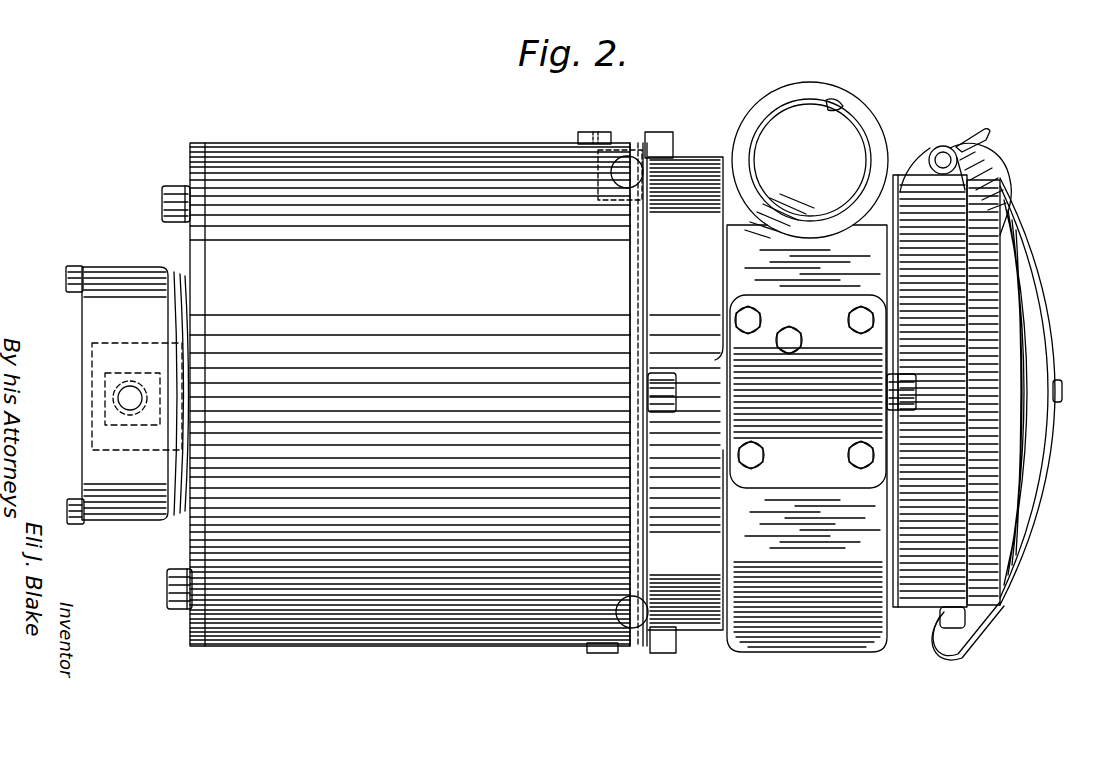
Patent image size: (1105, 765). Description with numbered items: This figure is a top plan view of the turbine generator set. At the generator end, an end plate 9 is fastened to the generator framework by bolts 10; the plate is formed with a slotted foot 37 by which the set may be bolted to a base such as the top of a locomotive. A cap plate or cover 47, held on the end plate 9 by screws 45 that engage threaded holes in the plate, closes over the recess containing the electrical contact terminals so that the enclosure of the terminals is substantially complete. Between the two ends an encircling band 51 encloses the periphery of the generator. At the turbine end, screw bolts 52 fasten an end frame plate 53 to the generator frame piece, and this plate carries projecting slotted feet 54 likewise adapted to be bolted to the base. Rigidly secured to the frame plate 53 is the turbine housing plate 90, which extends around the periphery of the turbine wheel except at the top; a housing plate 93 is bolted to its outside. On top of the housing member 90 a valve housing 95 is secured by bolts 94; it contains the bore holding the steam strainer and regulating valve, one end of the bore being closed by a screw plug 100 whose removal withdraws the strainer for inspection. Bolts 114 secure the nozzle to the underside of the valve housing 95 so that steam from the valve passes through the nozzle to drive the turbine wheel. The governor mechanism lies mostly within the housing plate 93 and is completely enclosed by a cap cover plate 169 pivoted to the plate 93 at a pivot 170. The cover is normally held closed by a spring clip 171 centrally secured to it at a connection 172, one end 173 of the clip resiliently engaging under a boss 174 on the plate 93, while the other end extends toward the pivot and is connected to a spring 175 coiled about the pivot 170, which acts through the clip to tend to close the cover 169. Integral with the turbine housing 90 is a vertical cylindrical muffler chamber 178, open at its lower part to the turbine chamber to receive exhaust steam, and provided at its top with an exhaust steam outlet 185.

The end plate 9 is at (192, 632).
The bolts 10 is at (168, 203).
The slotted foot 37 is at (100, 422).
The screws 45 is at (70, 276).
The cap plate or cover 47 is at (105, 463).
The encircling band 51 is at (414, 156).
The screw bolts 52 is at (674, 386).
The end frame plate 53 is at (678, 290).
The projecting slotted feet 54 is at (658, 142).
The turbine housing plate 90 is at (810, 634).
The housing plate 93 is at (918, 608).
The bolts 94 is at (748, 318).
The valve housing 95 is at (808, 391).
The screw plug 100 is at (902, 392).
The bolts 114 is at (790, 340).
The cap cover plate 169 is at (1012, 508).
The pivot 170 is at (942, 158).
The spring clip 171 is at (1048, 480).
The connection 172 is at (1060, 388).
The end of spring clip 173 is at (960, 660).
The boss 174 is at (958, 618).
The spring 175 is at (970, 143).
The muffler chamber 178 is at (856, 112).
The exhaust steam outlet 185 is at (840, 102).